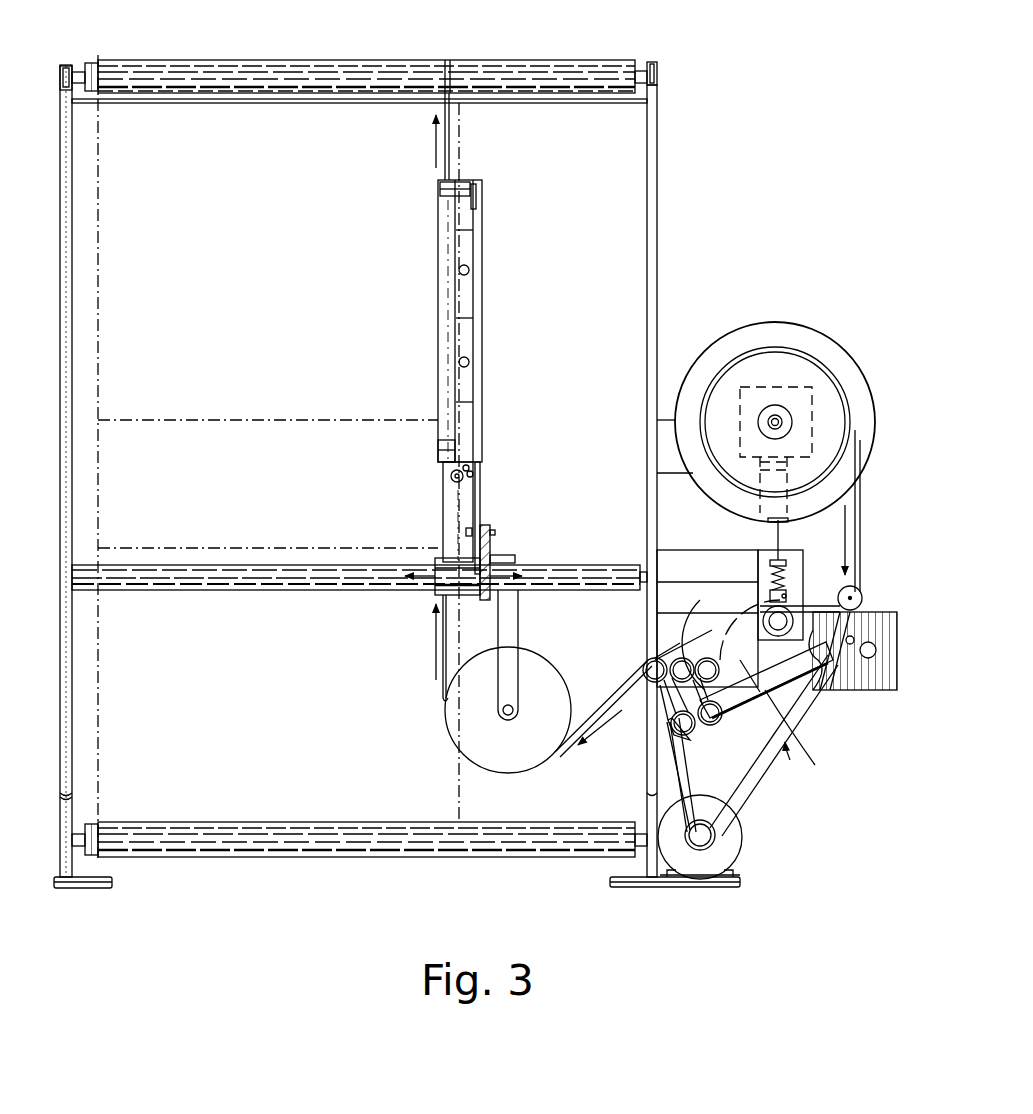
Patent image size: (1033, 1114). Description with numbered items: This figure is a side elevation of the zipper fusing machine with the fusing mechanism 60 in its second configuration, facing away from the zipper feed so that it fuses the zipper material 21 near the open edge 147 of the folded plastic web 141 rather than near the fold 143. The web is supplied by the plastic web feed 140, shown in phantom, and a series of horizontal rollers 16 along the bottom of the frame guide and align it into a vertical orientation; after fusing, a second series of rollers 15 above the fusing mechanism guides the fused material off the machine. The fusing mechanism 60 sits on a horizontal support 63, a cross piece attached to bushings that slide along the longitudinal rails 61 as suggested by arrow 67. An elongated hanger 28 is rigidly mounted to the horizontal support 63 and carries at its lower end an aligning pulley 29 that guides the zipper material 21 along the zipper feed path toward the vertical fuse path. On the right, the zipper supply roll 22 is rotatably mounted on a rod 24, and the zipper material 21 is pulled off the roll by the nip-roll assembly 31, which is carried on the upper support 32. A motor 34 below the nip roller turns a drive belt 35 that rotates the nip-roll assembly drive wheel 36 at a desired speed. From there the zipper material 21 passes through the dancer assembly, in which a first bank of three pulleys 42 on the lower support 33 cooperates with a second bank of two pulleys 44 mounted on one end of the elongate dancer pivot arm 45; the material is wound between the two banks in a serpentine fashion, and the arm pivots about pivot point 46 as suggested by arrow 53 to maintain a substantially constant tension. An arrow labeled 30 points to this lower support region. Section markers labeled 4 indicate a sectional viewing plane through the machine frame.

The section line 4- 4 is at (125, 32).
The rollers 15 is at (600, 60).
The rollers 16 is at (558, 858).
The zipper material 21 is at (434, 675).
The zipper supply roll 22 is at (791, 326).
The rod 24 is at (782, 420).
The hanger 28 is at (512, 635).
The aligning pulley 29 is at (520, 750).
The tensioning assembly 30 is at (902, 628).
The nip-roll assembly 31 is at (800, 568).
The upper support 32 is at (705, 572).
The lower support 33 is at (880, 690).
The motor 34 is at (742, 832).
The drive belt 35 is at (760, 772).
The nip-roll assembly drive wheel 36 is at (861, 588).
The first bank of pulleys 42 is at (699, 662).
The second bank of pulleys 44 is at (704, 730).
The dancer pivot arm 45 is at (800, 698).
The pivot point 46 is at (850, 688).
The arrow 53 is at (787, 758).
The fusing mechanism 60 is at (435, 235).
The rails 61 is at (570, 565).
The horizontal support 63 is at (493, 552).
The arrow 67 is at (434, 563).
The plastic web feed 140 is at (94, 548).
The plastic web 141 is at (275, 351).
The fold 143 is at (60, 300).
The outer edge 147 is at (450, 161).